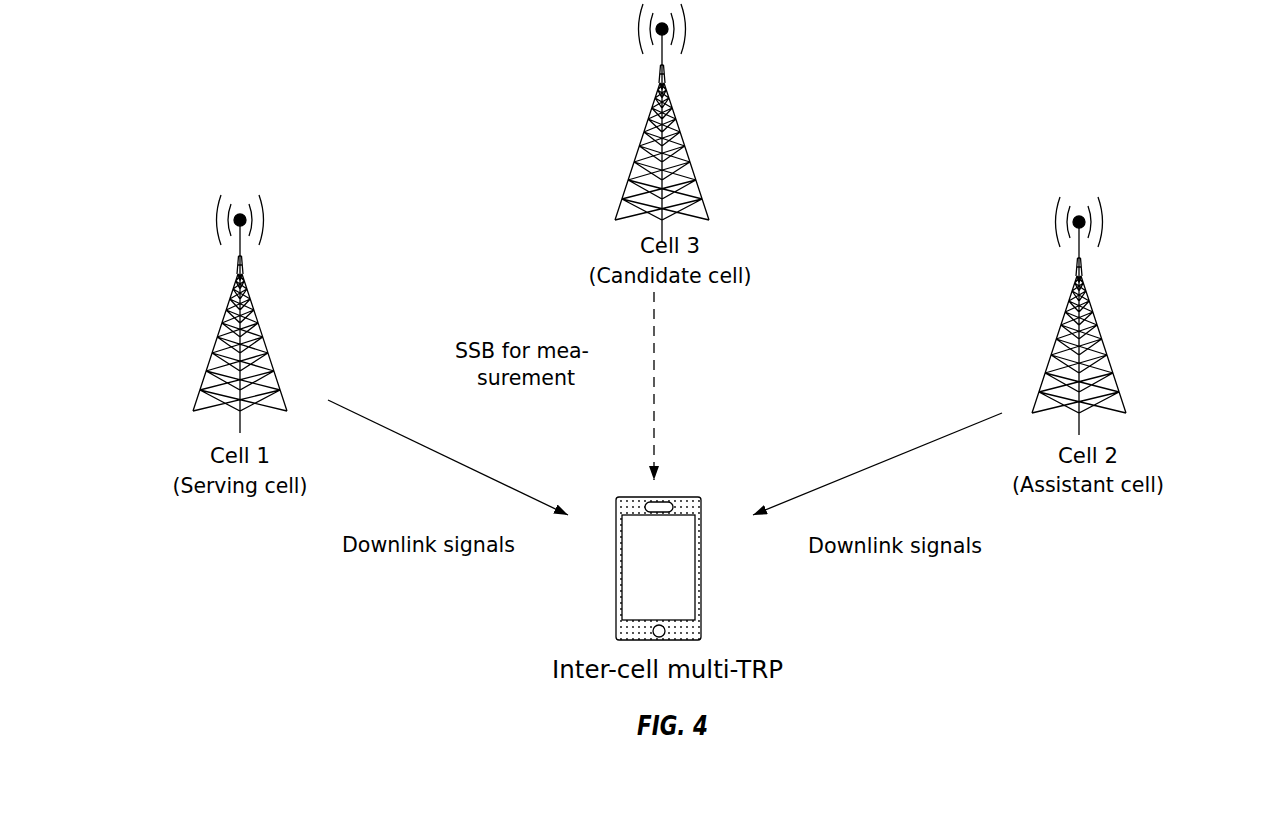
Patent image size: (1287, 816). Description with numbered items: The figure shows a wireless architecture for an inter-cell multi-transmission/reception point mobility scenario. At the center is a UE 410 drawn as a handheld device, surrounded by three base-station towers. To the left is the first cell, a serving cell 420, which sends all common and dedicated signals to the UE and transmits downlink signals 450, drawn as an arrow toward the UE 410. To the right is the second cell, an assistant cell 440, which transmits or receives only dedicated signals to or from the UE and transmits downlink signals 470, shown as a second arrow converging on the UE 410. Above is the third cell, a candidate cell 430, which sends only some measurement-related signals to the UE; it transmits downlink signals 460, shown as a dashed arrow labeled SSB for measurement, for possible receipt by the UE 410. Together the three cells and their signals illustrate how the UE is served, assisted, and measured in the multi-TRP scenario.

The UE 410 is at (705, 590).
The serving cell 420 is at (263, 307).
The candidate cell 430 is at (678, 117).
The assistant cell 440 is at (1108, 330).
The downlink signals 450 is at (442, 437).
The downlink signals 460 is at (648, 365).
The downlink signals 470 is at (870, 467).